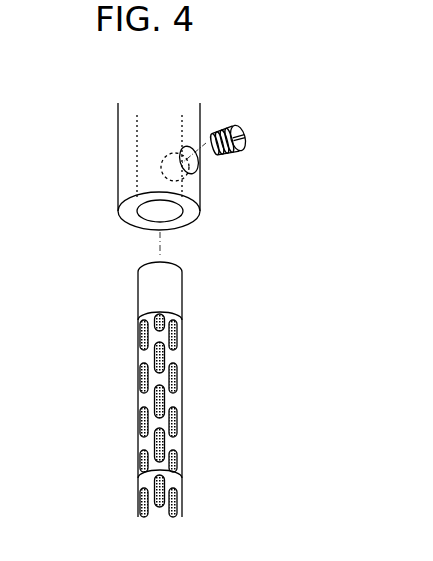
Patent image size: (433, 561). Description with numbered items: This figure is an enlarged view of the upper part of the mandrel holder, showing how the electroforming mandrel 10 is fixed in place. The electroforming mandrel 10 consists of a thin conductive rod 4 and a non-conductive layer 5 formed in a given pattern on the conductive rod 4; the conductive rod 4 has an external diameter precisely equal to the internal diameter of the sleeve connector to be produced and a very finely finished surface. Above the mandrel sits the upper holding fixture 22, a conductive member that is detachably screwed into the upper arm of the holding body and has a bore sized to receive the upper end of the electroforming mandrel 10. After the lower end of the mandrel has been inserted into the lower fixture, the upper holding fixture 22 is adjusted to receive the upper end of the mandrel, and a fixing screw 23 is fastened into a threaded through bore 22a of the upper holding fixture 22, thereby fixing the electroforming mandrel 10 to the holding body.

The upper holding fixture 22 is at (117, 152).
The threaded through bore 22a is at (198, 172).
The fixing screw 23 is at (238, 125).
The conductive rod 4 is at (183, 299).
The electroforming mandrel 10 is at (131, 349).
The non-conductive layer 5 is at (184, 392).